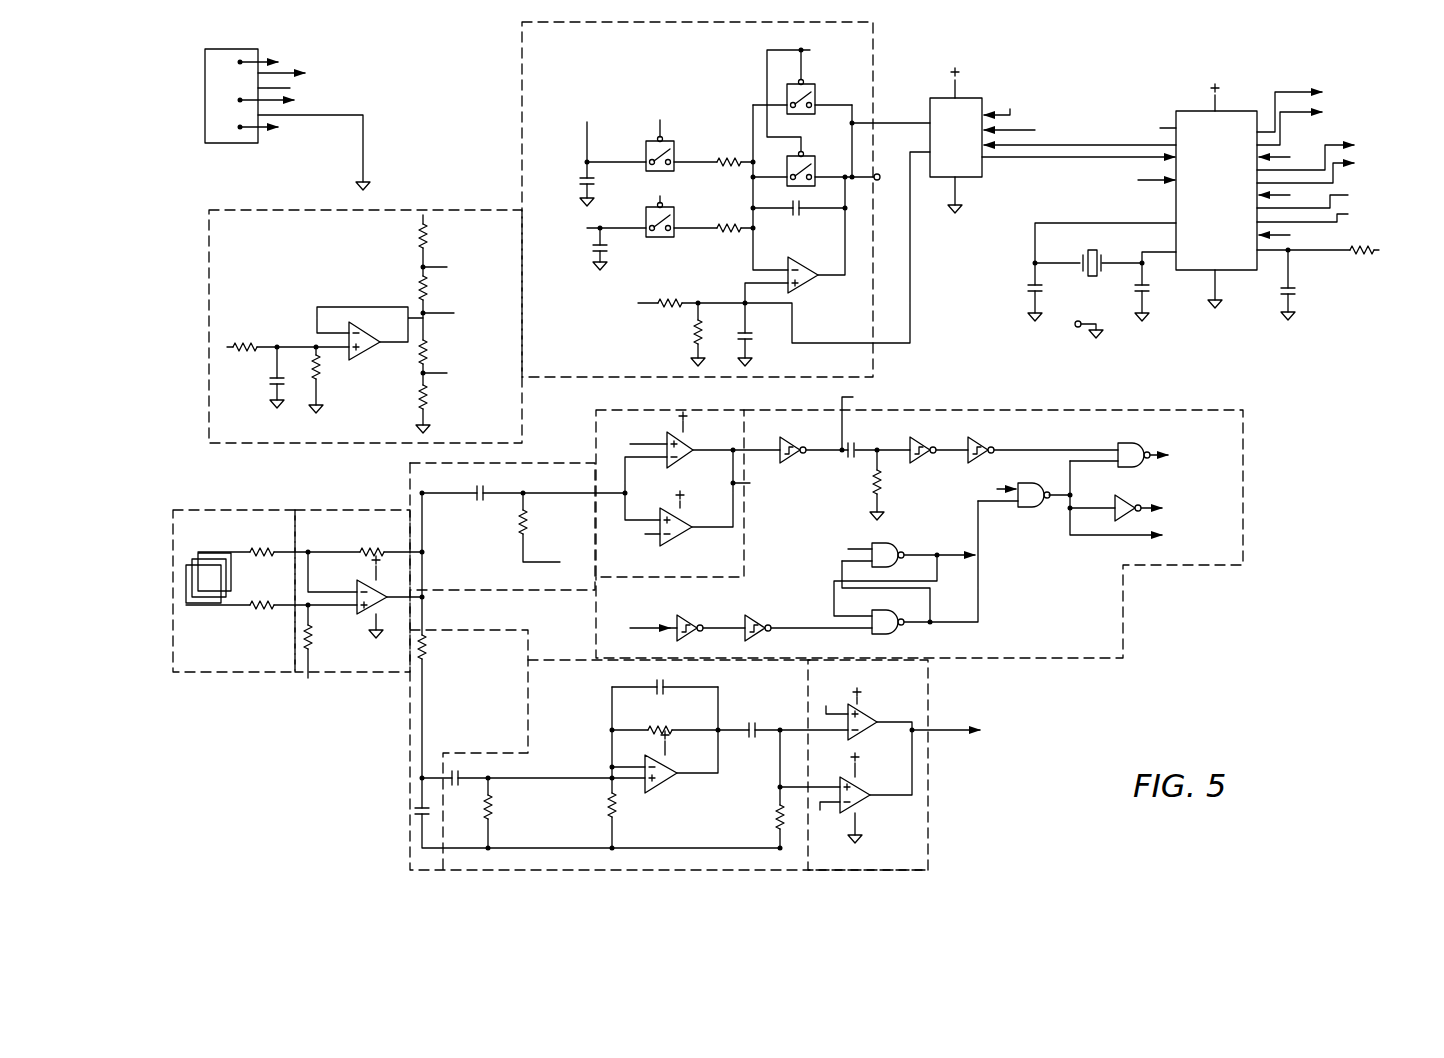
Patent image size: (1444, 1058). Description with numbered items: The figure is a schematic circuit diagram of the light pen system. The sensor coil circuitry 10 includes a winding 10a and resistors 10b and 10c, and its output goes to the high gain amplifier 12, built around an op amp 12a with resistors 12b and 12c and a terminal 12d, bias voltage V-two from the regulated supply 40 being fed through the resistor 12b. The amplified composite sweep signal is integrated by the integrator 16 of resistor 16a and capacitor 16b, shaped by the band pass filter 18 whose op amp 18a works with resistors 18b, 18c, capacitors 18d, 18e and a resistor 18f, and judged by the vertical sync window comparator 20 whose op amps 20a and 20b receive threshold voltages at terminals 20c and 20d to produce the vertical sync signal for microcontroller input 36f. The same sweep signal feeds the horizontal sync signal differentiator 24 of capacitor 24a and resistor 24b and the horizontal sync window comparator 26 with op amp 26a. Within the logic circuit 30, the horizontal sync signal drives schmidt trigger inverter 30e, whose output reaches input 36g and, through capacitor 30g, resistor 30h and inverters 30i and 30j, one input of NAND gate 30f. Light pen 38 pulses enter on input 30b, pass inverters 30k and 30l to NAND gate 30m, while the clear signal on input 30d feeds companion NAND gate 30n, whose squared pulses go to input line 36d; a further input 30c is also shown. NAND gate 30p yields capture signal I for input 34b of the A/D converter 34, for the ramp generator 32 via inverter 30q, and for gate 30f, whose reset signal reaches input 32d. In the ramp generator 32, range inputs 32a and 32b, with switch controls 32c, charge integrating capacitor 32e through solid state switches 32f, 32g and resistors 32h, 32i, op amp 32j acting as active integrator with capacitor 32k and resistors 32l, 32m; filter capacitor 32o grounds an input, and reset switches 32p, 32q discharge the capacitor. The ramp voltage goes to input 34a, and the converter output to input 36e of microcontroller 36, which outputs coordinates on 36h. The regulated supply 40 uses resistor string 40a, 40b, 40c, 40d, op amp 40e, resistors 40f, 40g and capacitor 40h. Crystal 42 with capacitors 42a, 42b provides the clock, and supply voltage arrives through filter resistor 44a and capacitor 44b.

The sensor coil circuitry 10 is at (235, 510).
The winding 10a is at (208, 562).
The resistor 10b is at (253, 540).
The resistor 10c is at (247, 590).
The amplifier 12 is at (360, 510).
The operational amplifier 12a is at (360, 591).
The resistor 12b is at (312, 640).
The resistor 12c is at (372, 548).
The terminal 12d is at (316, 677).
The integrator 16 is at (410, 746).
The resistor 16a is at (428, 650).
The capacitor 16b is at (414, 812).
The band pass filter 18 is at (567, 658).
The operational amplifier 18a is at (664, 793).
The resistor 18b is at (497, 812).
The resistor 18c is at (651, 729).
The capacitor 18d is at (658, 685).
The capacitor 18e is at (751, 722).
The resistor 18f is at (773, 812).
The vertical sync window comparator 20 is at (930, 672).
The operational amplifier 20a is at (870, 713).
The operational amplifier 20b is at (857, 790).
The terminal 20c is at (845, 704).
The terminal 20d is at (829, 787).
The horizontal sync signal differentiator 24 is at (556, 463).
The capacitor 24a is at (481, 500).
The resistor 24b is at (519, 525).
The horizontal sync window comparator 26 is at (640, 410).
The operational amplifier 26a is at (686, 446).
The logic circuit 30 is at (985, 410).
The logic circuit input 30b is at (661, 626).
The gate input 30c is at (1004, 488).
The logic circuit input 30d is at (860, 546).
The schmidt trigger inverter 30e is at (797, 442).
The NAND gate 30f is at (1130, 443).
The capacitor 30g is at (851, 446).
The resistor 30h is at (888, 488).
The inverter 30i is at (918, 445).
The inverter 30j is at (983, 444).
The inverter 30k is at (711, 617).
The inverter 30l is at (808, 617).
The NAND gate 30m is at (910, 567).
The companion NAND gate 30n is at (892, 543).
The NAND gate 30p is at (1034, 507).
The inverter 30q is at (1126, 496).
The ramp generator 32 is at (522, 112).
The range control input 32a is at (601, 133).
The range control input 32b is at (596, 232).
The switch control input 32c is at (660, 128).
The ramp generator input 32d is at (768, 50).
The integrating capacitor 32e is at (799, 223).
The solid state switch 32f is at (646, 150).
The solid state switch 32g is at (646, 227).
The resistor 32h is at (720, 160).
The resistor 32i is at (723, 233).
The operational amplifier 32j is at (806, 287).
The capacitor 32k is at (771, 336).
The resistor 32l is at (692, 338).
The resistor 32m is at (664, 303).
The filter capacitor 32o is at (607, 254).
The solid state integrator reset switch 32p is at (815, 92).
The solid state integrator reset switch 32q is at (812, 157).
The A/D converter 34 is at (960, 98).
The A/D converter input 34a is at (907, 123).
The A/D converter input 34b is at (994, 131).
The microcontroller 36 is at (1230, 111).
The microcontroller input line 36d is at (1160, 128).
The microcontroller input 36e is at (1150, 144).
The microcontroller input 36f is at (1290, 157).
The microcontroller input 36g is at (1291, 235).
The microcontroller output 36h is at (1291, 195).
The light pen 38 is at (205, 84).
The regulated supply 40 is at (447, 210).
The resistor 40a is at (412, 240).
The resistor 40b is at (415, 290).
The resistor 40c is at (429, 352).
The resistor 40d is at (429, 399).
The operational amplifier 40e is at (377, 328).
The resistor 40f is at (250, 341).
The resistor 40g is at (320, 375).
The capacitor 40h is at (270, 382).
The crystal 42 is at (1090, 250).
The capacitor 42a is at (1030, 290).
The capacitor 42b is at (1147, 289).
The filter resistor 44a is at (1358, 256).
The capacitor 44b is at (1296, 290).